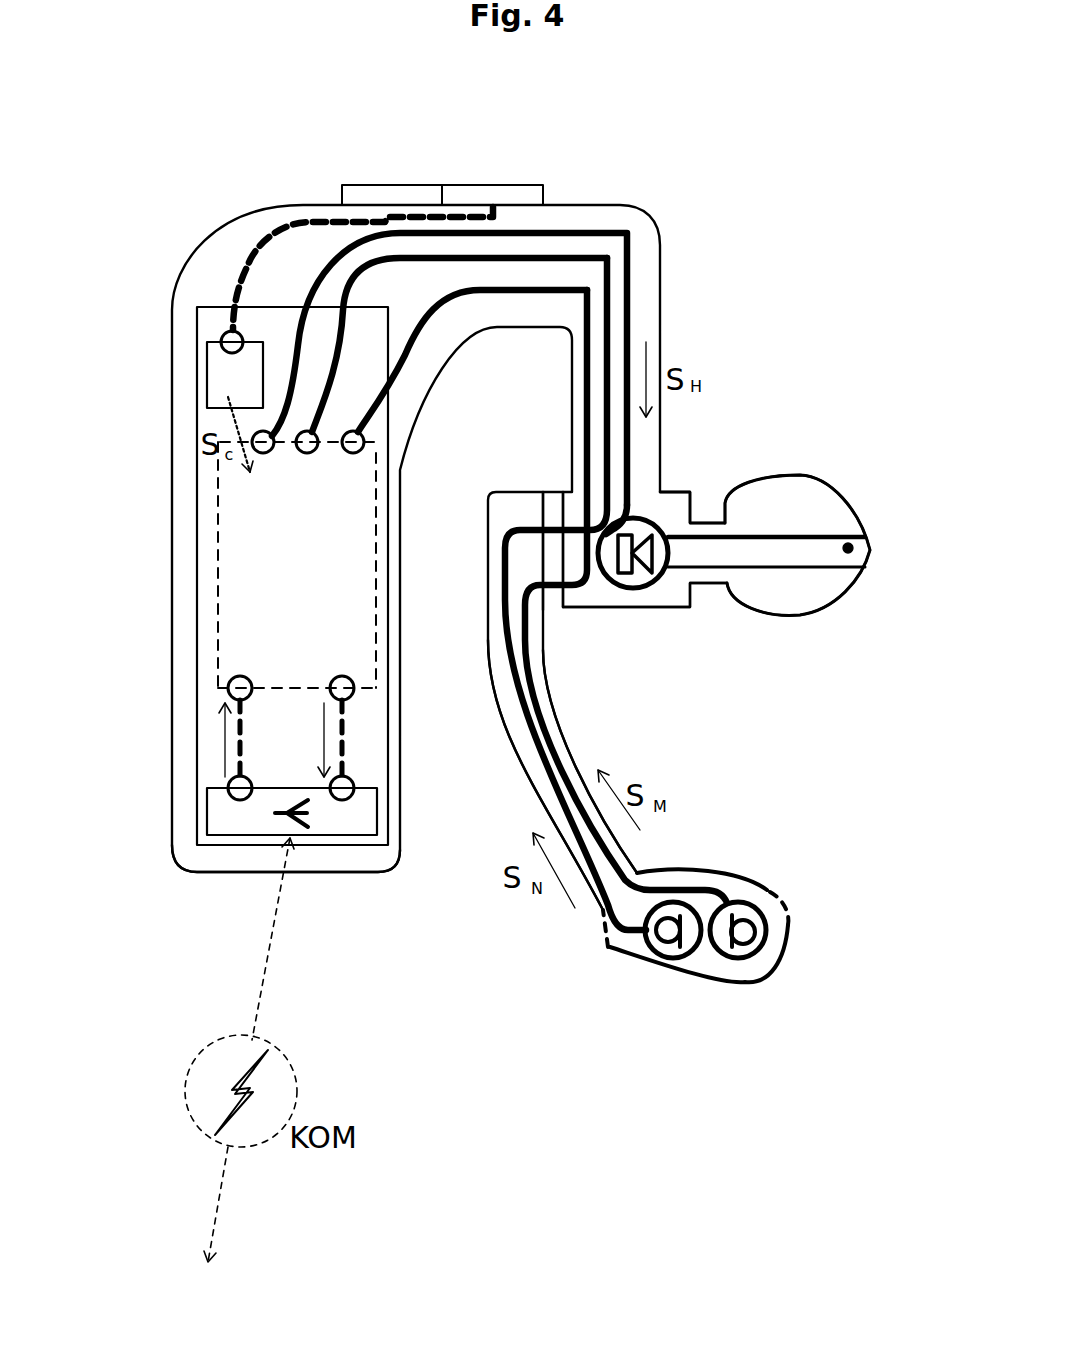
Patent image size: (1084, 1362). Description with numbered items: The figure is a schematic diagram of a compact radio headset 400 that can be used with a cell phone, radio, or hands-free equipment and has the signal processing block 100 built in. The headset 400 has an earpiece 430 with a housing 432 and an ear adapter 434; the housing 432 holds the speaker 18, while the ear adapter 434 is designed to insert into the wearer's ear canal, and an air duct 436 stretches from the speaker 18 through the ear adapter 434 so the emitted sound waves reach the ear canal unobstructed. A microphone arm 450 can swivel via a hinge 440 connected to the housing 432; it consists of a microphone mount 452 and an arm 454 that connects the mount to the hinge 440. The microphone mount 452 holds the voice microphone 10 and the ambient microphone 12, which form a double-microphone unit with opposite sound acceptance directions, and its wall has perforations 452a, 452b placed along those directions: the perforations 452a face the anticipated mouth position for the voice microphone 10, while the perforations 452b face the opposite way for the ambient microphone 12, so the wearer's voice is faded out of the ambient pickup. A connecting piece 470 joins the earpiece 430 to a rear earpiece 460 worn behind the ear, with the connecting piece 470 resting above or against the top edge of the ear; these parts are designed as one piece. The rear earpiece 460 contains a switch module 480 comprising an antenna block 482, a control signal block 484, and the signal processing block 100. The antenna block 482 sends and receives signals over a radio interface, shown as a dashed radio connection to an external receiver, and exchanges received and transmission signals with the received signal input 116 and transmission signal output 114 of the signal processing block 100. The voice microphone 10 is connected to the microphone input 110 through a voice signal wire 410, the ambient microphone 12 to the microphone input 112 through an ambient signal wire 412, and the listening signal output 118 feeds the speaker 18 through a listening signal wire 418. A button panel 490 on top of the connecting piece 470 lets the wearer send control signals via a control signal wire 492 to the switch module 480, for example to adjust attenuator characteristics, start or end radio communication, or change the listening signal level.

The radio headset 400 is at (841, 50).
The connecting piece 470 is at (607, 192).
The rear earpiece 460 is at (190, 905).
The arm 454 is at (522, 775).
The button panel 490 is at (340, 183).
The control signal wire 492 is at (248, 262).
The listening signal wire 418 is at (612, 250).
The voice signal wire 410 is at (532, 300).
The ambient signal wire 412 is at (442, 310).
The control signal block 484 is at (205, 367).
The signal processing block 100 is at (275, 582).
The transmission signal output 114 is at (237, 675).
The received signal input 116 is at (333, 672).
The listening signal output 118 is at (258, 455).
The microphone input 112 is at (307, 453).
The microphone input 110 is at (353, 453).
The switch module 480 is at (197, 793).
The antenna block 482 is at (343, 835).
The earpiece 430 is at (700, 648).
The housing 432 is at (686, 472).
The hinge 440 is at (553, 600).
The speaker 18 is at (633, 590).
The ear adapter 434 is at (778, 474).
The air duct 436 is at (850, 548).
The microphone arm 450 is at (693, 910).
The microphone mount 452 is at (742, 984).
The perforation 452a is at (787, 910).
The perforation 452b is at (600, 940).
The ambient microphone 12 is at (640, 948).
The voice microphone 10 is at (742, 882).